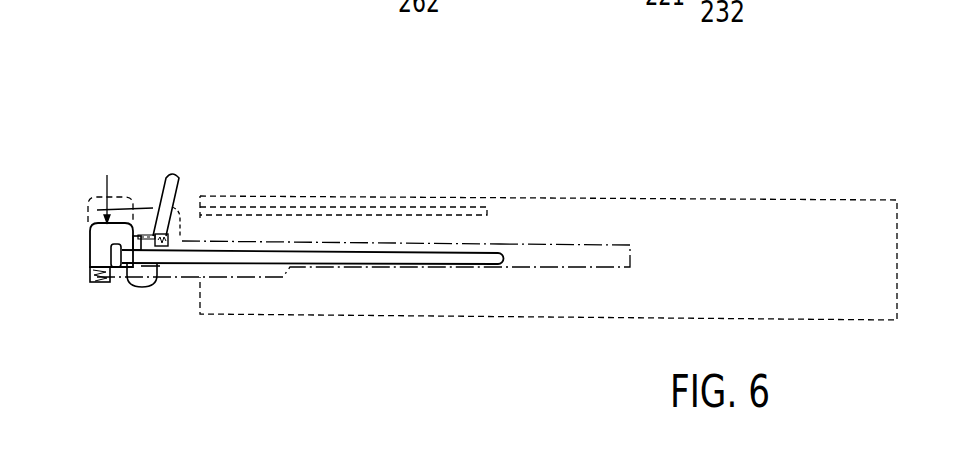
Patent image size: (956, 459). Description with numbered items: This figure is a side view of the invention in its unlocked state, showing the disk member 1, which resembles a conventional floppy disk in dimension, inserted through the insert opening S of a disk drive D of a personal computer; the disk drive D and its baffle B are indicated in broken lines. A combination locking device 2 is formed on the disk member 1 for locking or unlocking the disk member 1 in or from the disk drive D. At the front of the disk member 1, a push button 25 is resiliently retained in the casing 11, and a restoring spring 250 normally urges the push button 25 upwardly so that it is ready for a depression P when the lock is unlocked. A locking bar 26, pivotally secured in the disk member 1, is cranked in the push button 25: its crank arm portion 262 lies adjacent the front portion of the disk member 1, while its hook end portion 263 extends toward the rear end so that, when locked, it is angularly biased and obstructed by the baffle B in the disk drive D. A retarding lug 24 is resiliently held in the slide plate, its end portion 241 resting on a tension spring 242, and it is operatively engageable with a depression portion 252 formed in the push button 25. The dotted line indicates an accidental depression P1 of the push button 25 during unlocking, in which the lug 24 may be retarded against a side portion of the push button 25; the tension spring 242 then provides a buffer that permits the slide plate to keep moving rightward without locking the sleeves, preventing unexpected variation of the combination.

The disk member 1 is at (594, 244).
The combination locking device 2 is at (80, 250).
The casing 11 is at (152, 205).
The retarding lug 24 is at (164, 172).
The end portion 241 is at (178, 212).
The tension spring 242 is at (178, 174).
The push button 25 is at (88, 228).
The restoring spring 250 is at (98, 276).
The locking bar 26 is at (364, 264).
The depression portion 252 is at (158, 273).
The crank arm portion 262 is at (130, 272).
The hook end portion 263 is at (513, 252).
The baffle B is at (481, 208).
The disk drive D is at (711, 199).
The depression P is at (92, 224).
The accidental depression P1 is at (124, 192).
The insert opening S is at (200, 242).